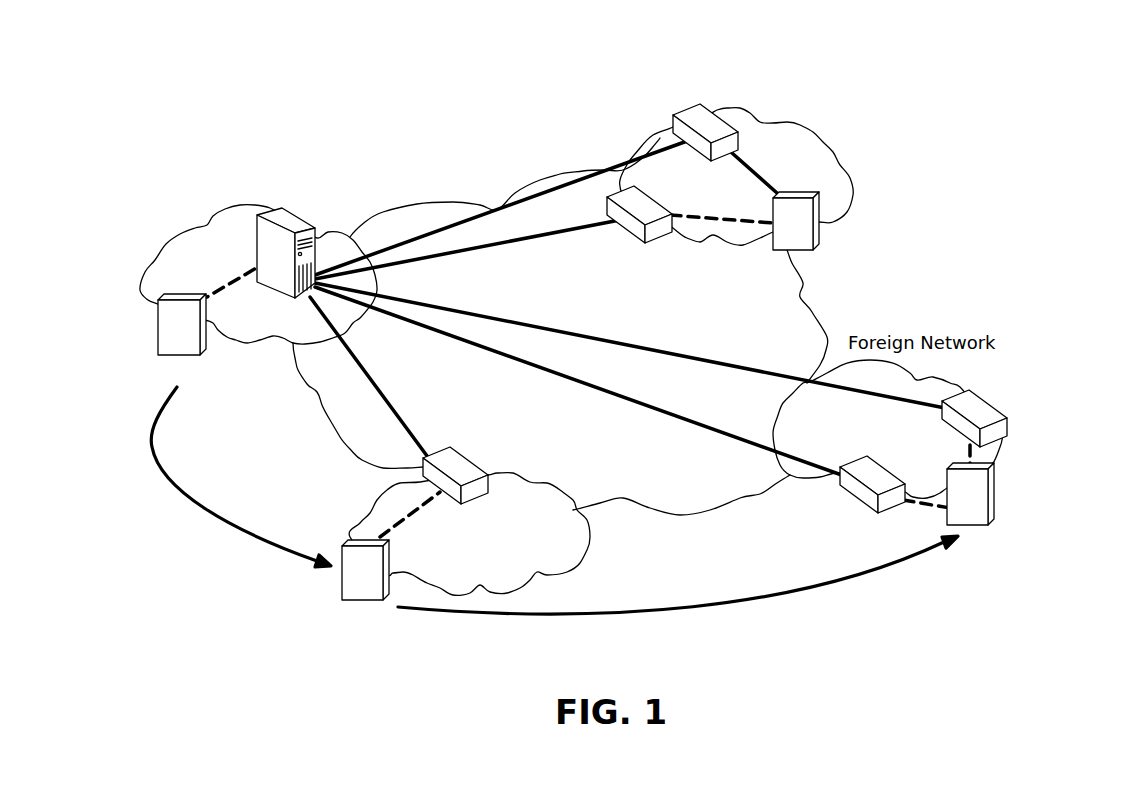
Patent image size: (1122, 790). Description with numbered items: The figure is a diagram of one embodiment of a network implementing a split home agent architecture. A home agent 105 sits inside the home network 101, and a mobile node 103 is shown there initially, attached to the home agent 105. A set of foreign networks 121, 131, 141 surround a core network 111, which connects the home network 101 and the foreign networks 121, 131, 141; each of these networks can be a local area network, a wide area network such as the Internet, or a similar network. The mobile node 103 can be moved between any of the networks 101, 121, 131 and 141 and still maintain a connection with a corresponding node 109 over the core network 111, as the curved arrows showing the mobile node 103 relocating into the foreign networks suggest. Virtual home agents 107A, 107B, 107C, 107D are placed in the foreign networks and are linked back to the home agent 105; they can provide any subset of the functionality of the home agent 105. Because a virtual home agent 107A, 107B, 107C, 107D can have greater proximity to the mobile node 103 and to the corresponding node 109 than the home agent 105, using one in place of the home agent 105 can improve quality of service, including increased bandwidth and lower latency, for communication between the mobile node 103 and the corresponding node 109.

The home network 101 is at (177, 252).
The mobile node 103 is at (161, 337).
The home agent 105 is at (293, 218).
The virtual home agent 107A is at (460, 465).
The virtual home agent 107B is at (717, 128).
The virtual home agent 107C is at (980, 405).
The virtual home agent 107D is at (668, 228).
The corresponding node 109 is at (820, 237).
The core network 111 is at (693, 490).
The foreign network 121 is at (517, 580).
The foreign network 131 is at (993, 452).
The foreign network 141 is at (828, 177).